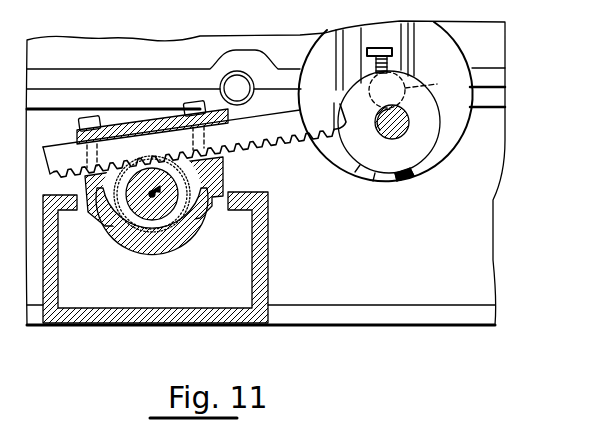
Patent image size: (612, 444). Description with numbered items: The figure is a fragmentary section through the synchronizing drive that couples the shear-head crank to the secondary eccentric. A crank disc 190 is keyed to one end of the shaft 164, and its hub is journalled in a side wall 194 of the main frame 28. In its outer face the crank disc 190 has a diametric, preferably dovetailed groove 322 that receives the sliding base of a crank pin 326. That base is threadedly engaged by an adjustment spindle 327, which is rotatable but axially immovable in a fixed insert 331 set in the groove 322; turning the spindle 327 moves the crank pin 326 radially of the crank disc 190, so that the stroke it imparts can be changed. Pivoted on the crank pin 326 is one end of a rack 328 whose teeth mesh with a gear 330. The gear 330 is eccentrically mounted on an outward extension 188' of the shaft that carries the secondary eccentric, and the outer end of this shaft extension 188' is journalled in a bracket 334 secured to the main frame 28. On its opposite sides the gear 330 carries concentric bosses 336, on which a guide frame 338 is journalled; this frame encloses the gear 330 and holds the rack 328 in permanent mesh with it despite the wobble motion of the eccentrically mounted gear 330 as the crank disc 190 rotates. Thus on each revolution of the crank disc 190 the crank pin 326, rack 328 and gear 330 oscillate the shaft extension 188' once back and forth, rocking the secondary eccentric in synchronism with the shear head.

The main frame 28 is at (478, 203).
The side wall 194 is at (278, 55).
The crank disc 190 is at (460, 115).
The shaft 164 is at (401, 124).
The crank pin 326 is at (407, 127).
The fixed insert 331 is at (380, 27).
The adjustment spindle 327 is at (297, 110).
The diametric groove 322 is at (390, 68).
The guide frame 338 is at (84, 184).
The gear 330 is at (222, 173).
The shaft extension 188' is at (152, 210).
The concentric bosses 336 is at (186, 241).
The rack 328 is at (254, 143).
The bracket 334 is at (266, 258).